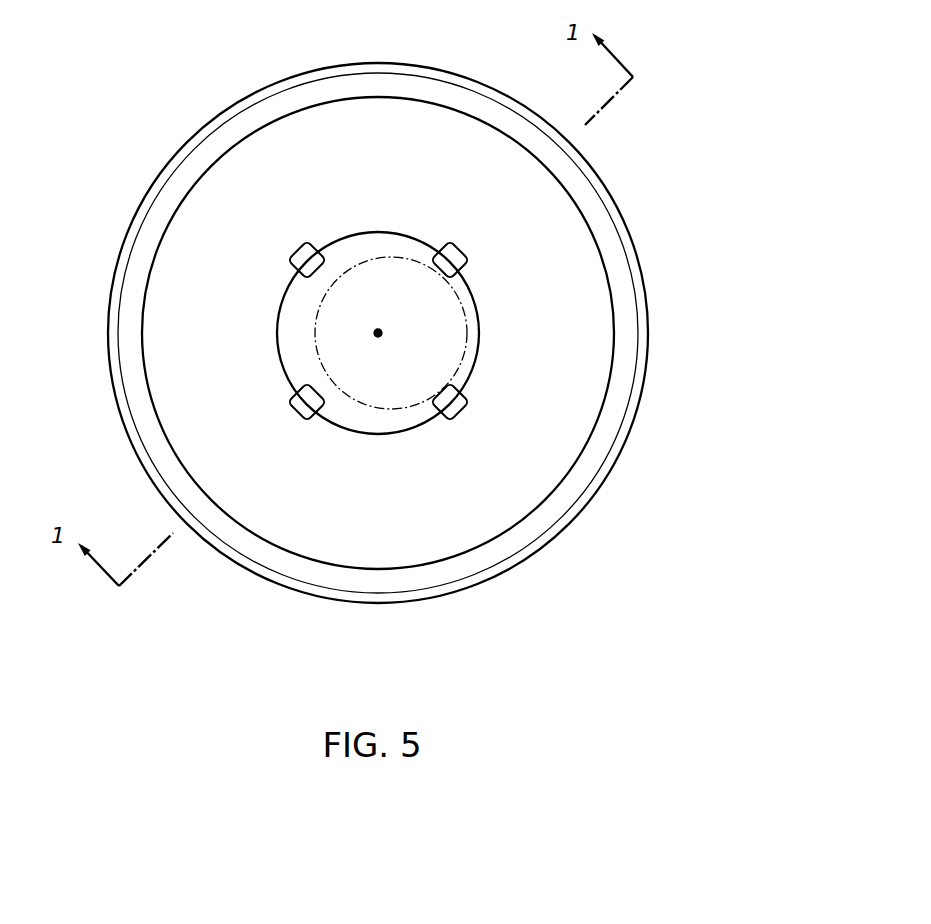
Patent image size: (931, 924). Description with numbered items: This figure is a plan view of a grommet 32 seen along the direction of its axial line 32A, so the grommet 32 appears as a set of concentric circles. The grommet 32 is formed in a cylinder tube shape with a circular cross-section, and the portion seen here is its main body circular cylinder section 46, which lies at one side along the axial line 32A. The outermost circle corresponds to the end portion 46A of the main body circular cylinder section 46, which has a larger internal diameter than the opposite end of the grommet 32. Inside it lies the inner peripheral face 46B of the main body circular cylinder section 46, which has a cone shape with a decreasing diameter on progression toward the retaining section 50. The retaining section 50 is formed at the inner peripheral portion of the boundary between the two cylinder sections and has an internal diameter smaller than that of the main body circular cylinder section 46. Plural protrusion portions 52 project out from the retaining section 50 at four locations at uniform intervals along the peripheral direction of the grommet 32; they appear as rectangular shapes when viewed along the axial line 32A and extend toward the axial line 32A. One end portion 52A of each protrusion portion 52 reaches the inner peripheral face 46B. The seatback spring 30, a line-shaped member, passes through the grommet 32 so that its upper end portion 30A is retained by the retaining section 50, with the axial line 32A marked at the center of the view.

The grommet 32 is at (644, 227).
The axial line 32A is at (378, 328).
The main body circular cylinder section 46 is at (655, 326).
The end portion 46A is at (607, 425).
The inner peripheral face 46B is at (543, 445).
The retaining section 50 is at (380, 234).
The seatback spring 30 is at (397, 416).
The upper end portion 30A is at (370, 408).
The protrusion portions 52 is at (321, 277).
The one end portion 52A is at (311, 264).